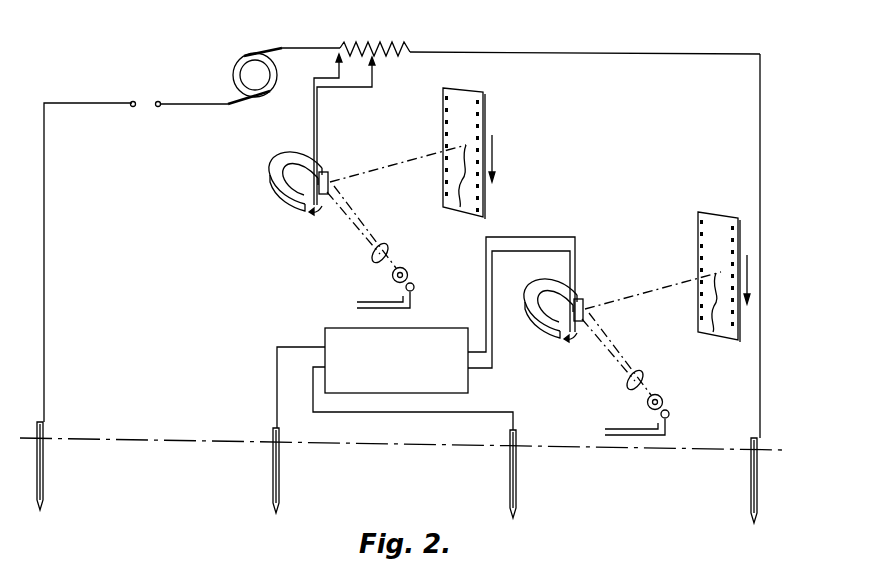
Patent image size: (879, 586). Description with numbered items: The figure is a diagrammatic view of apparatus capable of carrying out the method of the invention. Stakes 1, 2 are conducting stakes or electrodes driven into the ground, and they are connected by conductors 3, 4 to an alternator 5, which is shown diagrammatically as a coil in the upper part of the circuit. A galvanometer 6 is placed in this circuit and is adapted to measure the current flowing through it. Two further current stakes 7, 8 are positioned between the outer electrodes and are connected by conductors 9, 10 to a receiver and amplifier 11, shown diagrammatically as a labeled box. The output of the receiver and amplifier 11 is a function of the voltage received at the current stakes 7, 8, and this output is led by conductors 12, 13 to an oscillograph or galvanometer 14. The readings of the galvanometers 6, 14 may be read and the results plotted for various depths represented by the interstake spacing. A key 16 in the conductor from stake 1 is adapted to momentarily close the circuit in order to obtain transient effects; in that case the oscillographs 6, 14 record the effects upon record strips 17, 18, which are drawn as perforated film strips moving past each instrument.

The stake 1 is at (43, 497).
The stake 2 is at (758, 494).
The conductor 3 is at (46, 342).
The conductor 4 is at (761, 222).
The alternator 5 is at (244, 62).
The galvanometer 6 is at (329, 170).
The current stake 7 is at (279, 496).
The current stake 8 is at (517, 488).
The conductor 9 is at (277, 400).
The conductor 10 is at (507, 412).
The receiver and amplifier 11 is at (430, 328).
The conductor 12 is at (493, 356).
The conductor 13 is at (486, 284).
The oscillograph or galvanometer 14 is at (584, 298).
The key 16 is at (138, 93).
The record strip 17 is at (485, 120).
The record strip 18 is at (698, 232).